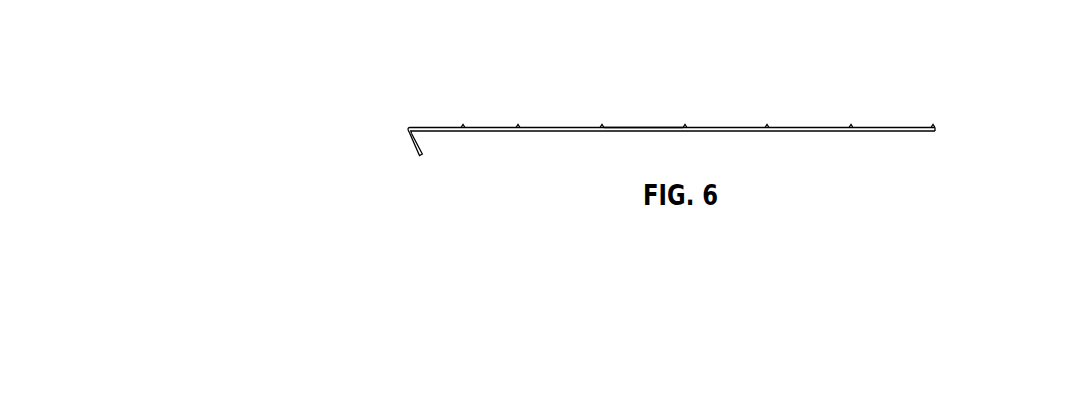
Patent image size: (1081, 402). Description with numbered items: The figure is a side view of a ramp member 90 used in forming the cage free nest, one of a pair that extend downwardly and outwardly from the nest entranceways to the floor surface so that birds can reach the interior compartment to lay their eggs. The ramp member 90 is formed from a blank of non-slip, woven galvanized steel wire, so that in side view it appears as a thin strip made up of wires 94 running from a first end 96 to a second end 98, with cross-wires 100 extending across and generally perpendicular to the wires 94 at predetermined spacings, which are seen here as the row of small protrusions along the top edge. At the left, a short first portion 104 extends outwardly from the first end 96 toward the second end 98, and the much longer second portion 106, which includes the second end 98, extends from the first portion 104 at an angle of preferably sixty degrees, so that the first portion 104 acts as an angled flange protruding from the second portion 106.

The ramp member 90 is at (970, 47).
The wires 94 is at (733, 126).
The first end 96 is at (421, 156).
The second end 98 is at (935, 131).
The cross-wires 100 is at (463, 125).
The first portion 104 is at (406, 134).
The second portion 106 is at (643, 127).